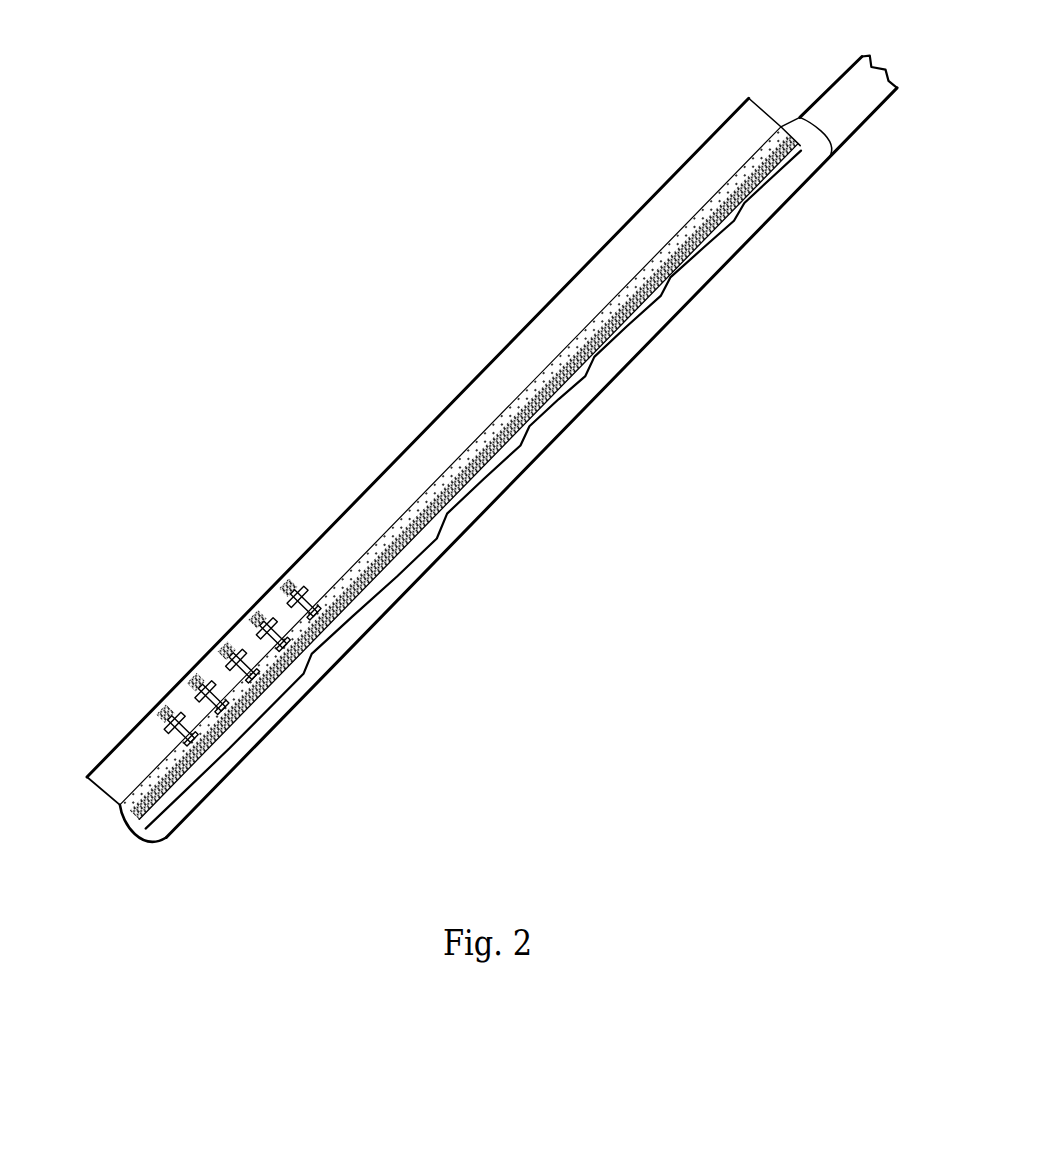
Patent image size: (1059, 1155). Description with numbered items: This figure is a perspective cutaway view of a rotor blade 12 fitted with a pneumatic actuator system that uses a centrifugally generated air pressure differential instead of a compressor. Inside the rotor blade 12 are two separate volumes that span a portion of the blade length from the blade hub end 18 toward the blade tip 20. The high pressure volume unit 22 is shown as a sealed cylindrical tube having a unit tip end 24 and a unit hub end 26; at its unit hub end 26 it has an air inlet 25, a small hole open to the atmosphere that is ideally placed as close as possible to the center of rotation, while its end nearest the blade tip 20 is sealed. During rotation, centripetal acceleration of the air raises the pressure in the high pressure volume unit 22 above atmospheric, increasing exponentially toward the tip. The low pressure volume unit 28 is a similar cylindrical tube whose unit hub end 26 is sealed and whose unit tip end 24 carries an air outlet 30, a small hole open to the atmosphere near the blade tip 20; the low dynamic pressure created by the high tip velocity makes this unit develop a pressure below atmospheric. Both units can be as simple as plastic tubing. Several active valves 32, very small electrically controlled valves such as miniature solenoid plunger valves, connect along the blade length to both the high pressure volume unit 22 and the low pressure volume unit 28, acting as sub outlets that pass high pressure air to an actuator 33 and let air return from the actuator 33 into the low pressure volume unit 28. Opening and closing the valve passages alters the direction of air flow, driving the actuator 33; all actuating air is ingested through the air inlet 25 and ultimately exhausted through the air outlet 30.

The rotor blade 12 is at (282, 722).
The blade hub end 18 is at (748, 97).
The blade tip 20 is at (86, 782).
The high pressure volume unit 22 is at (407, 537).
The unit tip end 24 is at (123, 807).
The air inlet 25 is at (795, 141).
The unit hub end 26 is at (727, 175).
The low pressure volume unit 28 is at (427, 473).
The air outlet 30 is at (121, 807).
The active valve 32 is at (165, 708).
The actuator 33 is at (231, 648).